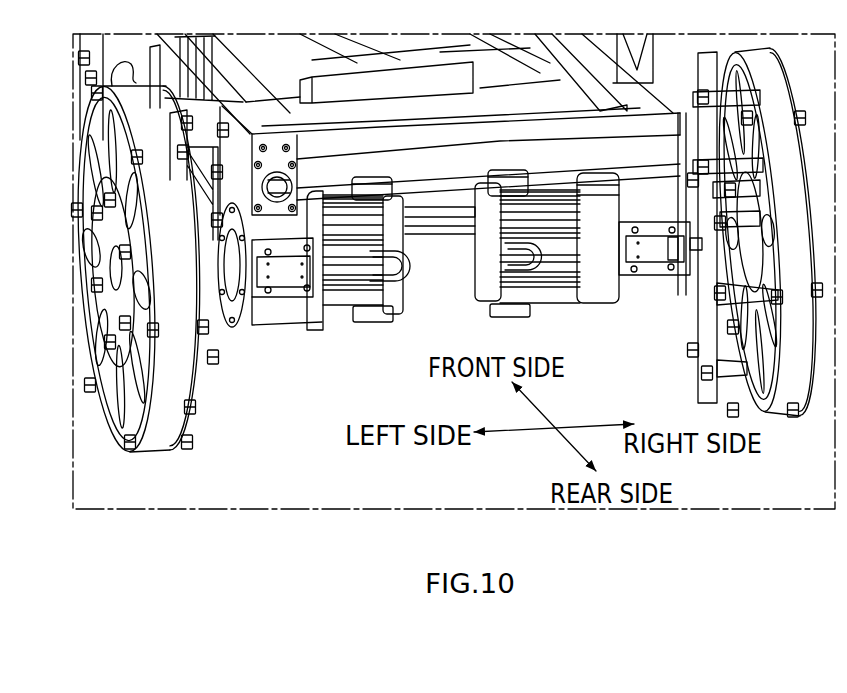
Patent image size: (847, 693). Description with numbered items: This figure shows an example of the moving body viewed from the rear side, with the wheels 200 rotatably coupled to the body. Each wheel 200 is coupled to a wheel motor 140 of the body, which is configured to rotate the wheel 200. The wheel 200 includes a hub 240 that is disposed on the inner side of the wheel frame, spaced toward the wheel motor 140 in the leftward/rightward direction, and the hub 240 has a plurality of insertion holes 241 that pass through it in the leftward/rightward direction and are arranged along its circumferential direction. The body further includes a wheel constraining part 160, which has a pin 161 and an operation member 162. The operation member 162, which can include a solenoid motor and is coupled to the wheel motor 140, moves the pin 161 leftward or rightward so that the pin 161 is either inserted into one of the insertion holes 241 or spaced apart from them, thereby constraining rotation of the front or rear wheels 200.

The wheel motor 140 is at (407, 287).
The wheel constraining part 160 is at (287, 292).
The pin 161 is at (227, 265).
The operation member 162 is at (316, 262).
The wheel 200 is at (203, 391).
The hub 240 is at (216, 250).
The insertion holes 241 is at (228, 234).